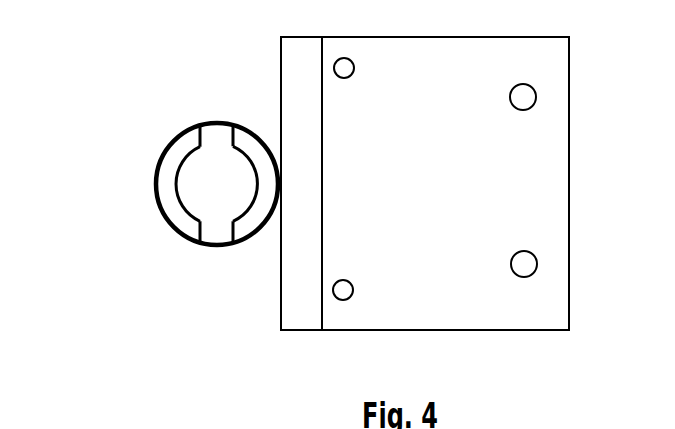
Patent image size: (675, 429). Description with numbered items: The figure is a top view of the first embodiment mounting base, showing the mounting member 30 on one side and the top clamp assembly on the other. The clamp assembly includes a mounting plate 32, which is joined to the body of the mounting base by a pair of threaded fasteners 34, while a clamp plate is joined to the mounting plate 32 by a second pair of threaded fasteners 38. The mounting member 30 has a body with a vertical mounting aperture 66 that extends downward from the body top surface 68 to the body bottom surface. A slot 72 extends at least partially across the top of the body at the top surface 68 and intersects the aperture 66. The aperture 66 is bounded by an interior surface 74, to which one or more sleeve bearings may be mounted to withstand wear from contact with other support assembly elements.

The mounting member 30 is at (160, 198).
The mounting plate 32 is at (543, 310).
The threaded fasteners 34 is at (345, 78).
The threaded fasteners 38 is at (523, 107).
The vertical mounting aperture 66 is at (217, 178).
The body top surface 68 is at (176, 143).
The slot 72 is at (211, 228).
The interior surface 74 is at (178, 178).